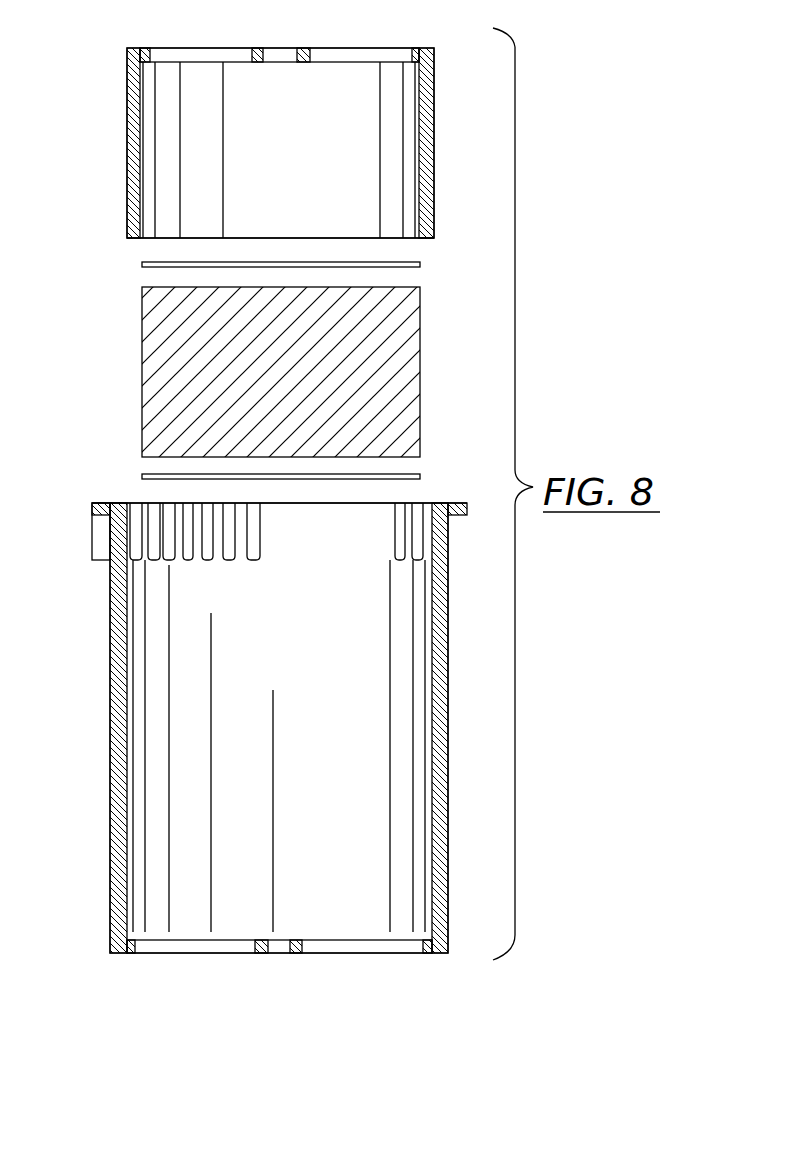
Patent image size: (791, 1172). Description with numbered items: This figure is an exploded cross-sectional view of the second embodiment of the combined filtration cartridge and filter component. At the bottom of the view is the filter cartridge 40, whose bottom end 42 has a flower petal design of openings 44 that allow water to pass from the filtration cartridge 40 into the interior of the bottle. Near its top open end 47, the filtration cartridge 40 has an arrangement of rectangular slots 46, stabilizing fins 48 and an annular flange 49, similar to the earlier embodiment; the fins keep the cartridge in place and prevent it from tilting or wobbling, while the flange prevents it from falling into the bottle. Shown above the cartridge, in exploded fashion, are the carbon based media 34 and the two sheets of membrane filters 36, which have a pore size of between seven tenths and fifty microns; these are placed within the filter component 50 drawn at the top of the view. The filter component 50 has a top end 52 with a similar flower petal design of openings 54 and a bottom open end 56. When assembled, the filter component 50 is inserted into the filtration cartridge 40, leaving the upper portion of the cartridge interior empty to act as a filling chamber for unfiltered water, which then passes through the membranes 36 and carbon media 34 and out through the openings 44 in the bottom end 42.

The carbon based media 34 is at (142, 345).
The filtration membranes 36 is at (142, 265).
The filter cartridge 40 is at (122, 690).
The bottom end 42 is at (120, 950).
The openings 44 is at (358, 940).
The rectangular slots 46 is at (205, 562).
The top open end 47 is at (283, 503).
The stabilizing fins 48 is at (100, 562).
The annular flange 49 is at (447, 503).
The filter component 50 is at (136, 125).
The top end 52 is at (127, 48).
The openings 54 is at (204, 61).
The bottom open end 56 is at (395, 240).